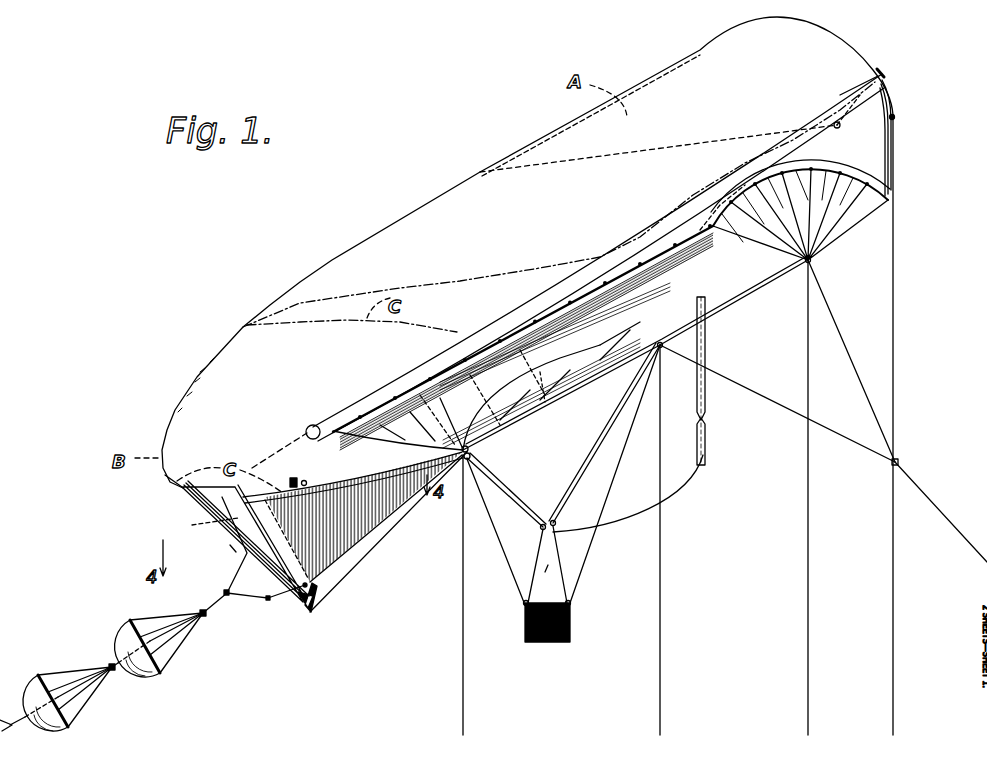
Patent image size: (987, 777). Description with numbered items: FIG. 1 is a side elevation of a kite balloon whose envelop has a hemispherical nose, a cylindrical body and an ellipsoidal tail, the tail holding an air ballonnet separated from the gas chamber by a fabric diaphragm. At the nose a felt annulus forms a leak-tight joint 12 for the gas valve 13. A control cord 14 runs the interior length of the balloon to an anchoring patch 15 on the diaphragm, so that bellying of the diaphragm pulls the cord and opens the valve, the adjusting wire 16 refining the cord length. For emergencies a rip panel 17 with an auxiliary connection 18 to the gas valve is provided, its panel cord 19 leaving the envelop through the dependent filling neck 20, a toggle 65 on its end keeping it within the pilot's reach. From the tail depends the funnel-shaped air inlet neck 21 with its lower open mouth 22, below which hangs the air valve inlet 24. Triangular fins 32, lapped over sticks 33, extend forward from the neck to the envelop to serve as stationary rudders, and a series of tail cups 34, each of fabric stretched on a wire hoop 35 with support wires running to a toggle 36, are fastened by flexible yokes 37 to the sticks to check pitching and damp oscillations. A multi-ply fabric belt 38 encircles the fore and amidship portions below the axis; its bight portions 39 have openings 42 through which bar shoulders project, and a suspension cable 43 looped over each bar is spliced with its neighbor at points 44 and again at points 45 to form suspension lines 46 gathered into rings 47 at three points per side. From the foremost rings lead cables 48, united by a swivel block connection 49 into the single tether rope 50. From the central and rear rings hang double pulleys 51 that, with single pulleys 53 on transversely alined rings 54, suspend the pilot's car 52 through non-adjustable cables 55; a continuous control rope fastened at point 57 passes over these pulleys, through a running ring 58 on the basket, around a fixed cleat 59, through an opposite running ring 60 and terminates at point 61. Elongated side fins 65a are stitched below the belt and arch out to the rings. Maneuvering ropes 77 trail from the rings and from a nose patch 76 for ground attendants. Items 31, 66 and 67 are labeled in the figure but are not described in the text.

The leak-tight joint 12 is at (884, 82).
The gas valve 13 is at (882, 72).
The control cord 14 is at (352, 325).
The anchoring patch 15 is at (192, 380).
The adjusting wire 16 is at (858, 96).
The rip panel 17 is at (560, 123).
The auxiliary connection 18 is at (850, 116).
The panel cord 19 is at (752, 260).
The filling neck 20 is at (706, 338).
The air inlet neck 21 is at (236, 528).
The lower open mouth 22 is at (312, 582).
The air valve inlet 24 is at (303, 612).
The brace 31 is at (615, 376).
The fins 32 is at (387, 497).
The sticks 33 is at (222, 600).
The tail cups 34 is at (128, 631).
The wire hoop 35 is at (148, 616).
The toggle 36 is at (120, 660).
The flexible yokes 37 is at (232, 546).
The fabric belt 38 is at (782, 182).
The bight portions 39 is at (526, 341).
The openings 42 is at (445, 435).
The suspension cable 43 is at (640, 262).
The splice points 44 is at (370, 432).
The splice points 45 is at (470, 402).
The suspension lines 46 is at (470, 445).
The rings 47 is at (463, 455).
The cables 48 is at (862, 407).
The swivel block connection 49 is at (900, 462).
The tether rope 50 is at (962, 537).
The double pulleys 51 is at (472, 456).
The pilot's car 52 is at (572, 615).
The single pulleys 53 is at (551, 520).
The main suspension rings 54 is at (540, 528).
The non-adjustable cables 55 is at (547, 564).
The attachment point 57 is at (558, 524).
The running ring 58 is at (575, 595).
The fixed cleat 59 is at (526, 607).
The running ring 60 is at (522, 603).
The termination point 61 is at (523, 525).
The toggle 65 is at (546, 571).
The side fins 65a is at (559, 407).
The fitting 66 is at (293, 478).
The ring fitting 67 is at (307, 482).
The nose patch 76 is at (895, 117).
The maneuvering ropes 77 is at (463, 690).